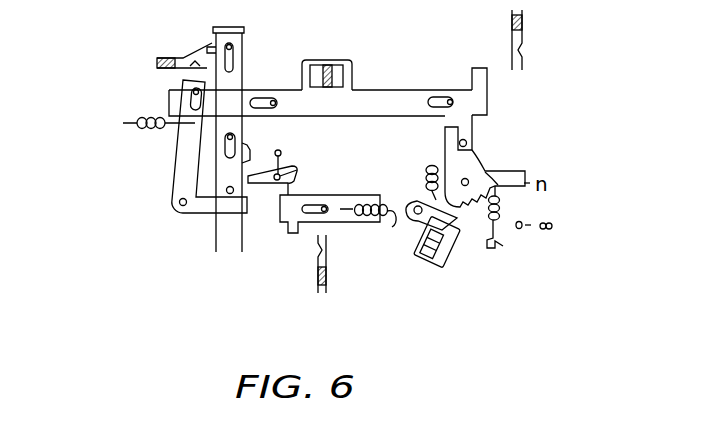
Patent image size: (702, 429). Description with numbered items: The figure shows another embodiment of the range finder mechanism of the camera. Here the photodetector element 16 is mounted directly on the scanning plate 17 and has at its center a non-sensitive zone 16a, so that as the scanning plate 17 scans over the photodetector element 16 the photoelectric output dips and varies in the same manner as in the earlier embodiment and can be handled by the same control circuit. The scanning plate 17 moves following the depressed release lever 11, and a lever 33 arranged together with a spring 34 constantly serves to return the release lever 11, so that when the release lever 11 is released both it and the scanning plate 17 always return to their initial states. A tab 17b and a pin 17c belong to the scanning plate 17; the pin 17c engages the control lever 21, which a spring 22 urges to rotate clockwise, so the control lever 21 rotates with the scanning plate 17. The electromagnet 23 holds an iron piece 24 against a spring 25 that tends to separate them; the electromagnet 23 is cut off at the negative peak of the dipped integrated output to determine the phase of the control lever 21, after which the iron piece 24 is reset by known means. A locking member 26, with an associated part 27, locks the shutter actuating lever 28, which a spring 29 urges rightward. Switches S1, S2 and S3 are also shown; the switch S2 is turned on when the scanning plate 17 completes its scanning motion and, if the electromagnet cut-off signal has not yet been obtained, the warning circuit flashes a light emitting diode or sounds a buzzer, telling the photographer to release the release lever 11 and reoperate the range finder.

The release lever 11 is at (253, 43).
The switch S1 is at (184, 48).
The photodetector element 16 is at (338, 64).
The non-sensitive zone 16a is at (322, 65).
The scanning plate 17 is at (414, 88).
The tab 17b is at (476, 67).
The pin 17c is at (467, 143).
The control lever 21 is at (506, 170).
The spring 22 is at (512, 228).
The electromagnet 23 is at (418, 258).
The iron piece 24 is at (411, 200).
The spring 25 is at (430, 165).
The locking member 26 is at (258, 184).
The pin lever 27 is at (283, 158).
The shutter actuating lever 28 is at (350, 178).
The spring 29 is at (368, 230).
The lever 33 is at (201, 215).
The spring 34 is at (131, 121).
The switch S2 is at (531, 40).
The switch S3 is at (335, 265).